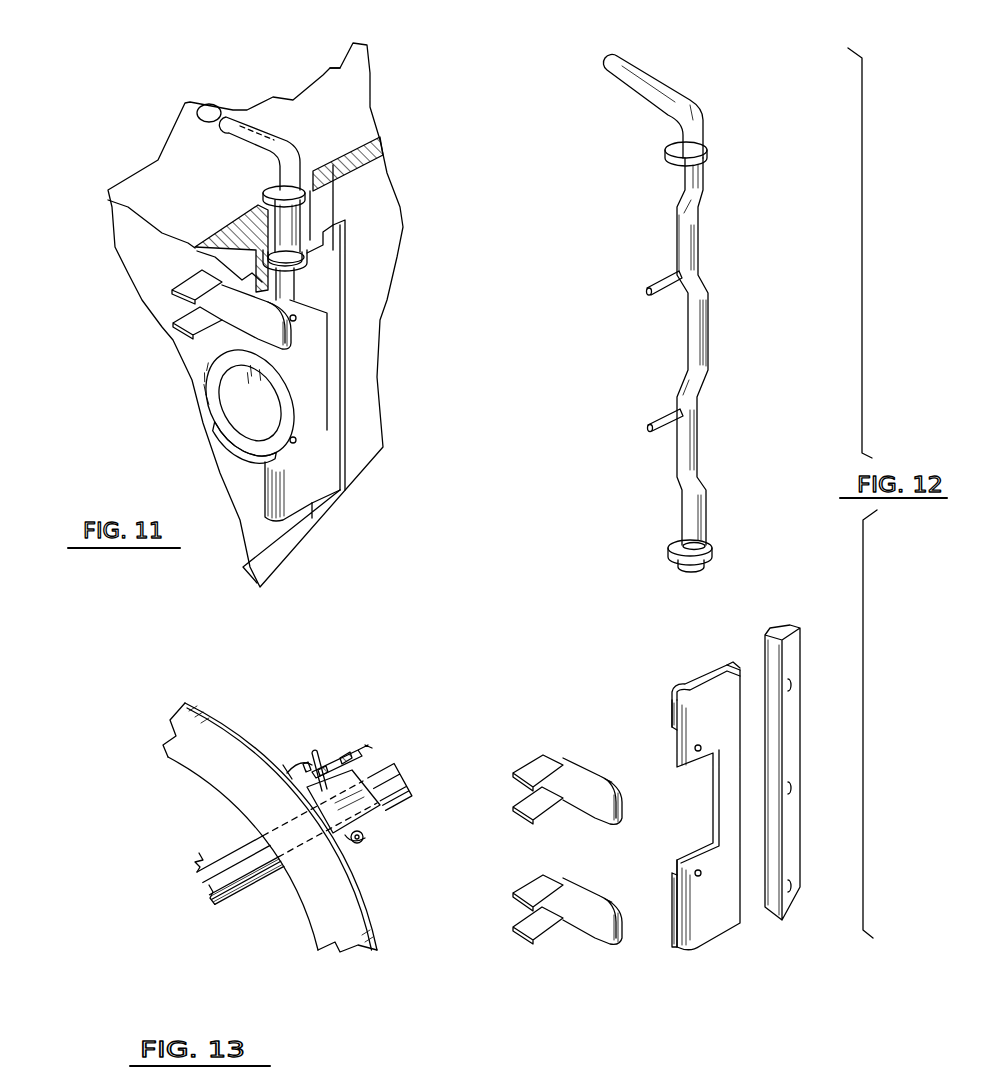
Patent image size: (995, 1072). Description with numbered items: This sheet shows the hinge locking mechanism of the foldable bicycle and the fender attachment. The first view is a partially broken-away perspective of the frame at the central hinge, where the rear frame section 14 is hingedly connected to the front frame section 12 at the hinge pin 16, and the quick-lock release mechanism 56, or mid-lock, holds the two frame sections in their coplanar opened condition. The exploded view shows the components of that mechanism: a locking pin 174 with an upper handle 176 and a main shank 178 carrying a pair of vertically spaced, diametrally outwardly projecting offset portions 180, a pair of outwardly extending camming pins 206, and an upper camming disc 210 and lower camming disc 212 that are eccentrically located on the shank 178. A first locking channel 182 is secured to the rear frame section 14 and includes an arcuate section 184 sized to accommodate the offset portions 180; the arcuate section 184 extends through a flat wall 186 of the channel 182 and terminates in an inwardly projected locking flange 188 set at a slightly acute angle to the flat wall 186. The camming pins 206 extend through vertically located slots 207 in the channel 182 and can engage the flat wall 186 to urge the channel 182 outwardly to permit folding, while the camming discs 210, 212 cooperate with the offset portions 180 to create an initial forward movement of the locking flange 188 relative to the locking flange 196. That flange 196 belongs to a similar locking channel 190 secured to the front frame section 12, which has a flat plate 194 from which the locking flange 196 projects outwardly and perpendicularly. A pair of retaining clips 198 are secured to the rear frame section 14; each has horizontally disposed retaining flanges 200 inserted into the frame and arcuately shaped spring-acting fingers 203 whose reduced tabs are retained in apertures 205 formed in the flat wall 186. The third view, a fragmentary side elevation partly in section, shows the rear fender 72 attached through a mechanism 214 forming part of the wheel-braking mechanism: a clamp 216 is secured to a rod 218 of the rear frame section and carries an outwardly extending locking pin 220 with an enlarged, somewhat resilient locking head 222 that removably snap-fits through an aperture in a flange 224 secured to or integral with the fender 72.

In FIG. 11, the rear frame section 14 is at (140, 160).
In FIG. 11, the hinge pin 16 is at (209, 104).
In FIG. 11, the front frame section 12 is at (373, 157).
In FIG. 11, the quick-lock release mechanism 56 is at (323, 133).
In FIG. 11, the upper handle 176 is at (252, 110).
In FIG. 12, the upper handle 176 is at (653, 77).
In FIG. 11, the upper camming disc 210 is at (273, 190).
In FIG. 12, the upper camming disc 210 is at (673, 143).
In FIG. 11, the main shank 178 is at (300, 223).
In FIG. 12, the main shank 178 is at (705, 173).
In FIG. 11, the arcuate section 184 is at (267, 416).
In FIG. 12, the arcuate section 184 is at (673, 687).
In FIG. 11, the first locking channel 182 is at (337, 343).
In FIG. 12, the first locking channel 182 is at (733, 810).
In FIG. 11, the flat wall 186 is at (320, 483).
In FIG. 12, the flat wall 186 is at (703, 930).
In FIG. 11, the apertures 205 is at (295, 323).
In FIG. 12, the apertures 205 is at (700, 745).
In FIG. 11, the retaining flanges 200 is at (193, 280).
In FIG. 12, the retaining flanges 200 is at (530, 753).
In FIG. 11, the retaining clips 198 is at (240, 317).
In FIG. 12, the retaining clips 198 is at (577, 797).
In FIG. 11, the spring-acting fingers 203 is at (300, 310).
In FIG. 12, the spring-acting fingers 203 is at (620, 780).
In FIG. 12, the locking pin 174 is at (733, 83).
In FIG. 12, the offset portions 180 is at (681, 242).
In FIG. 12, the camming pins 206 is at (644, 290).
In FIG. 12, the lower camming disc 212 is at (667, 540).
In FIG. 12, the locking channel 190 is at (807, 720).
In FIG. 12, the flat plate 194 is at (773, 627).
In FIG. 12, the locking flange 196 is at (767, 647).
In FIG. 12, the locking flange 188 is at (727, 665).
In FIG. 12, the slots 207 is at (673, 737).
In FIG. 13, the rear fender 72 is at (247, 740).
In FIG. 13, the rod 218 is at (380, 781).
In FIG. 13, the mechanism 214 is at (337, 707).
In FIG. 13, the locking pin 220 is at (337, 757).
In FIG. 13, the locking head 222 is at (310, 750).
In FIG. 13, the flange 224 is at (283, 764).
In FIG. 13, the clamp 216 is at (363, 810).